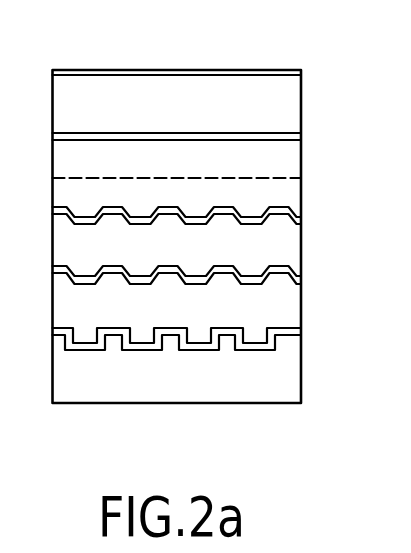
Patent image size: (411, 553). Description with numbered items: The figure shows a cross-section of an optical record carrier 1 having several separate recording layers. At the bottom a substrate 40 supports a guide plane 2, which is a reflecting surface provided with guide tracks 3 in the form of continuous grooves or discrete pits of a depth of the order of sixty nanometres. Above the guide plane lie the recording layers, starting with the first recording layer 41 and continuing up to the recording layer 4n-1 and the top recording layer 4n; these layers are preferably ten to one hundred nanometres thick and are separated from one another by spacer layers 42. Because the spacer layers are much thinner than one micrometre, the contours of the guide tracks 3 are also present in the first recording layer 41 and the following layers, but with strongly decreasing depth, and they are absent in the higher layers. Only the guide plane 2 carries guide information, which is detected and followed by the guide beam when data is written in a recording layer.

The optical record carrier 1 is at (331, 36).
The recording layer 4n is at (283, 97).
The recording layer 4n-1 is at (290, 135).
The spacer layer 42 is at (290, 213).
The first recording layer 41 is at (290, 272).
The guide plane 2 is at (290, 333).
The substrate 40 is at (288, 378).
The guide tracks 3 is at (193, 352).